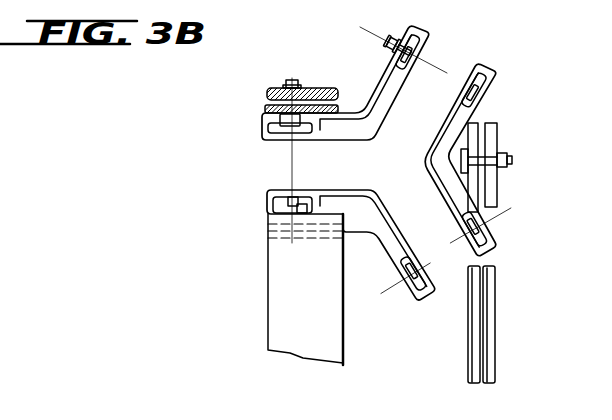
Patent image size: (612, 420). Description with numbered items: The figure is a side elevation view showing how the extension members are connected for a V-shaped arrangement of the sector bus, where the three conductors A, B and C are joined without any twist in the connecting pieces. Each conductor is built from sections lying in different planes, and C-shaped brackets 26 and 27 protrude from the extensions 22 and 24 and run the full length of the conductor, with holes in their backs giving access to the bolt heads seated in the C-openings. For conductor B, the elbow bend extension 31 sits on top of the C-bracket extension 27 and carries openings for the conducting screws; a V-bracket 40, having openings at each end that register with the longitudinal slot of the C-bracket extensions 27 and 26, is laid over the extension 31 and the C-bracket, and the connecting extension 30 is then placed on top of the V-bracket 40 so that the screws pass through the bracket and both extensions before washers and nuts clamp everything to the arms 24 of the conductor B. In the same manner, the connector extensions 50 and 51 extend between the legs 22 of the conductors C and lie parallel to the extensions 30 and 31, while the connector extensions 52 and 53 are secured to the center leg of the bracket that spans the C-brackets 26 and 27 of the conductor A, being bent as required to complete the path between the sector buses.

The extension 22 is at (315, 142).
The extension 24 is at (404, 83).
The C-shaped bracket 26 is at (262, 138).
The C-shaped bracket 27 is at (431, 31).
The connecting extension 30 is at (331, 88).
The elbow bend extension 31 is at (339, 112).
The V-bracket 40 is at (376, 76).
The connector extension 50 is at (344, 236).
The connector extension 51 is at (345, 217).
The conductor extension 52 is at (494, 134).
The conductor extension 53 is at (468, 140).
The conductor A is at (423, 172).
The conductor B is at (372, 142).
The conductor C is at (387, 183).